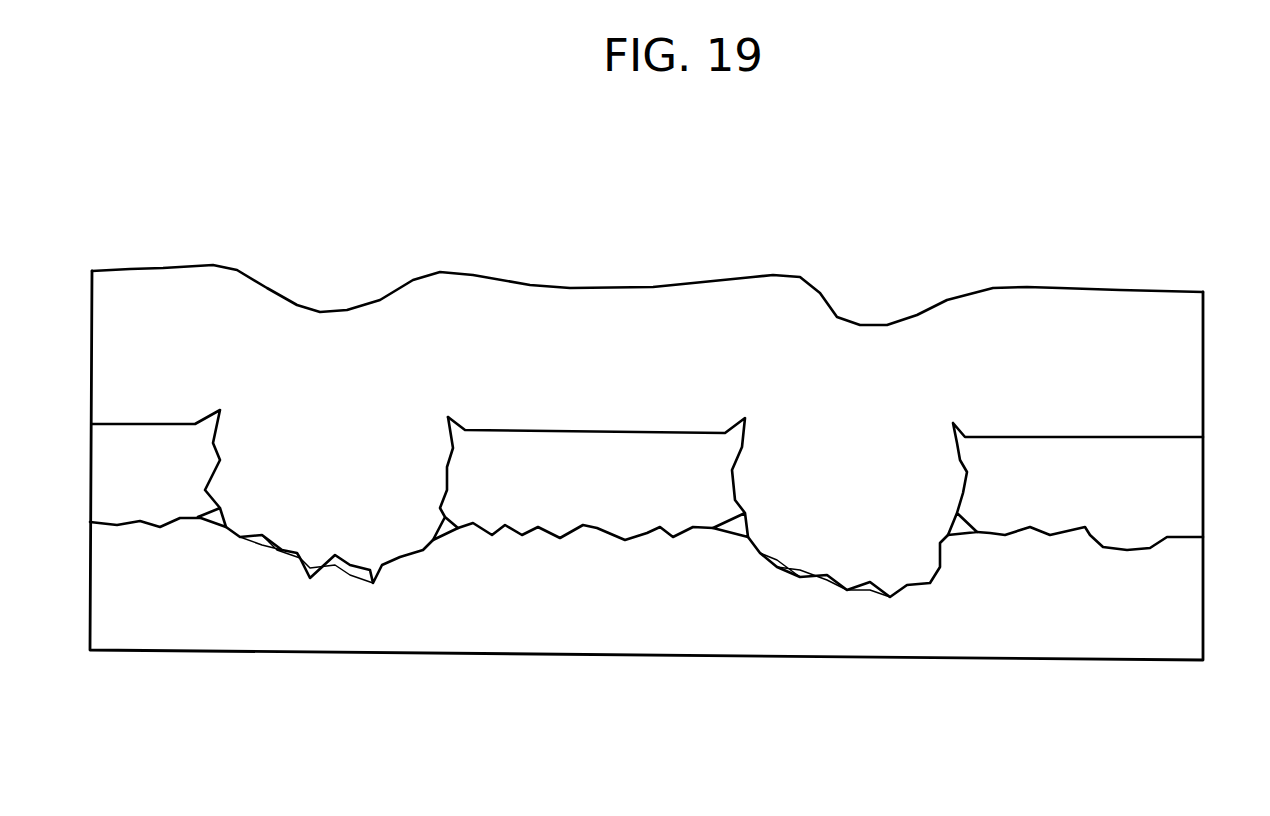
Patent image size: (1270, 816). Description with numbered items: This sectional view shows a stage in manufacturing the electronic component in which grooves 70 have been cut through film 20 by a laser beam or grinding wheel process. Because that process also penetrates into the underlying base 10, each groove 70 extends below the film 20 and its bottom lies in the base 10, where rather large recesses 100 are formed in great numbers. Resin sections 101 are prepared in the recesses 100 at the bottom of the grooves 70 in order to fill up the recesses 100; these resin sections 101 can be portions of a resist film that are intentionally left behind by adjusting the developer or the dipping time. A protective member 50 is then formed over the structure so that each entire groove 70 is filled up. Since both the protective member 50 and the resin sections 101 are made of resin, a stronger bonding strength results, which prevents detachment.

The base 10 is at (1180, 620).
The film 20 is at (602, 457).
The protective member 50 is at (1175, 408).
The groove 70 is at (243, 470).
The recess 100 is at (240, 543).
The resin section 101 is at (428, 547).